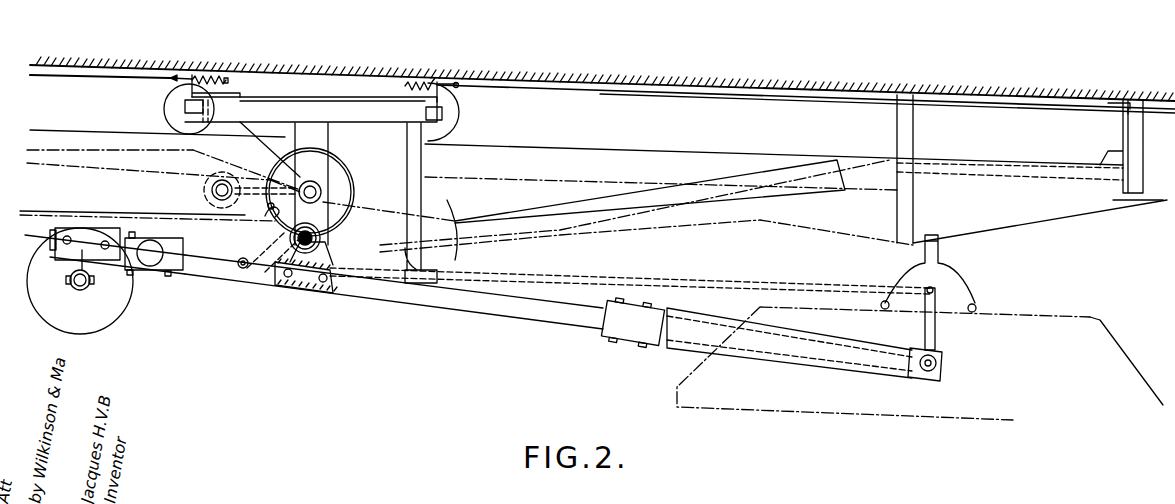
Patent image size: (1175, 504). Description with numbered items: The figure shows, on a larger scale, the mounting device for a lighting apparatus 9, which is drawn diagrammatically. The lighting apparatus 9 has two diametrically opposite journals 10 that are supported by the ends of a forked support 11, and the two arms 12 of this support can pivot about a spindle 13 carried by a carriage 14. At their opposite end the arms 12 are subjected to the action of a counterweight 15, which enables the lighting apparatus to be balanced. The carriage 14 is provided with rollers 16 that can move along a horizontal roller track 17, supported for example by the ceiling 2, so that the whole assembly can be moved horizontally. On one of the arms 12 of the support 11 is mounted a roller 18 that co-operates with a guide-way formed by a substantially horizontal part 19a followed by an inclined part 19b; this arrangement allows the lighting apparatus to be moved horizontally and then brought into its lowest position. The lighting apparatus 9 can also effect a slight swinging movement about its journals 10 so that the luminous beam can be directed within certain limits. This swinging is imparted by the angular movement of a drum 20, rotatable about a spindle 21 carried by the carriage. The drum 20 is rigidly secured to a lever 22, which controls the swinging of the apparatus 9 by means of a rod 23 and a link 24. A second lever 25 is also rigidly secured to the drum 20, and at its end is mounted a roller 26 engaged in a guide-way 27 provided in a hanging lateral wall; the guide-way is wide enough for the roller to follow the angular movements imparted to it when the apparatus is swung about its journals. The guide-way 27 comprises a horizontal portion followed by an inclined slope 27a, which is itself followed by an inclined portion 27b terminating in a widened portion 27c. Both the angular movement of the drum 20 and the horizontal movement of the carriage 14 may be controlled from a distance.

The ceiling 2 is at (667, 83).
The lighting apparatus 9 is at (1033, 317).
The journals 10 is at (928, 371).
The forked support 11 is at (805, 350).
The arms 12 is at (550, 313).
The spindle 13 is at (300, 256).
The carriage 14 is at (323, 203).
The counterweight 15 is at (105, 328).
The rollers 16 is at (457, 117).
The horizontal roller track 17 is at (500, 144).
The roller 18 is at (160, 270).
The horizontal part 19a is at (208, 250).
The inclined part 19b is at (457, 205).
The drum 20 is at (340, 160).
The spindle 21 is at (320, 185).
The lever 22 is at (270, 250).
The rod 23 is at (517, 280).
The link 24 is at (937, 333).
The second lever 25 is at (247, 207).
The roller 26 is at (203, 187).
The guide-way 27 is at (95, 150).
The inclined slope 27a is at (210, 163).
The inclined portion 27b is at (622, 203).
The widened portion 27c is at (837, 232).